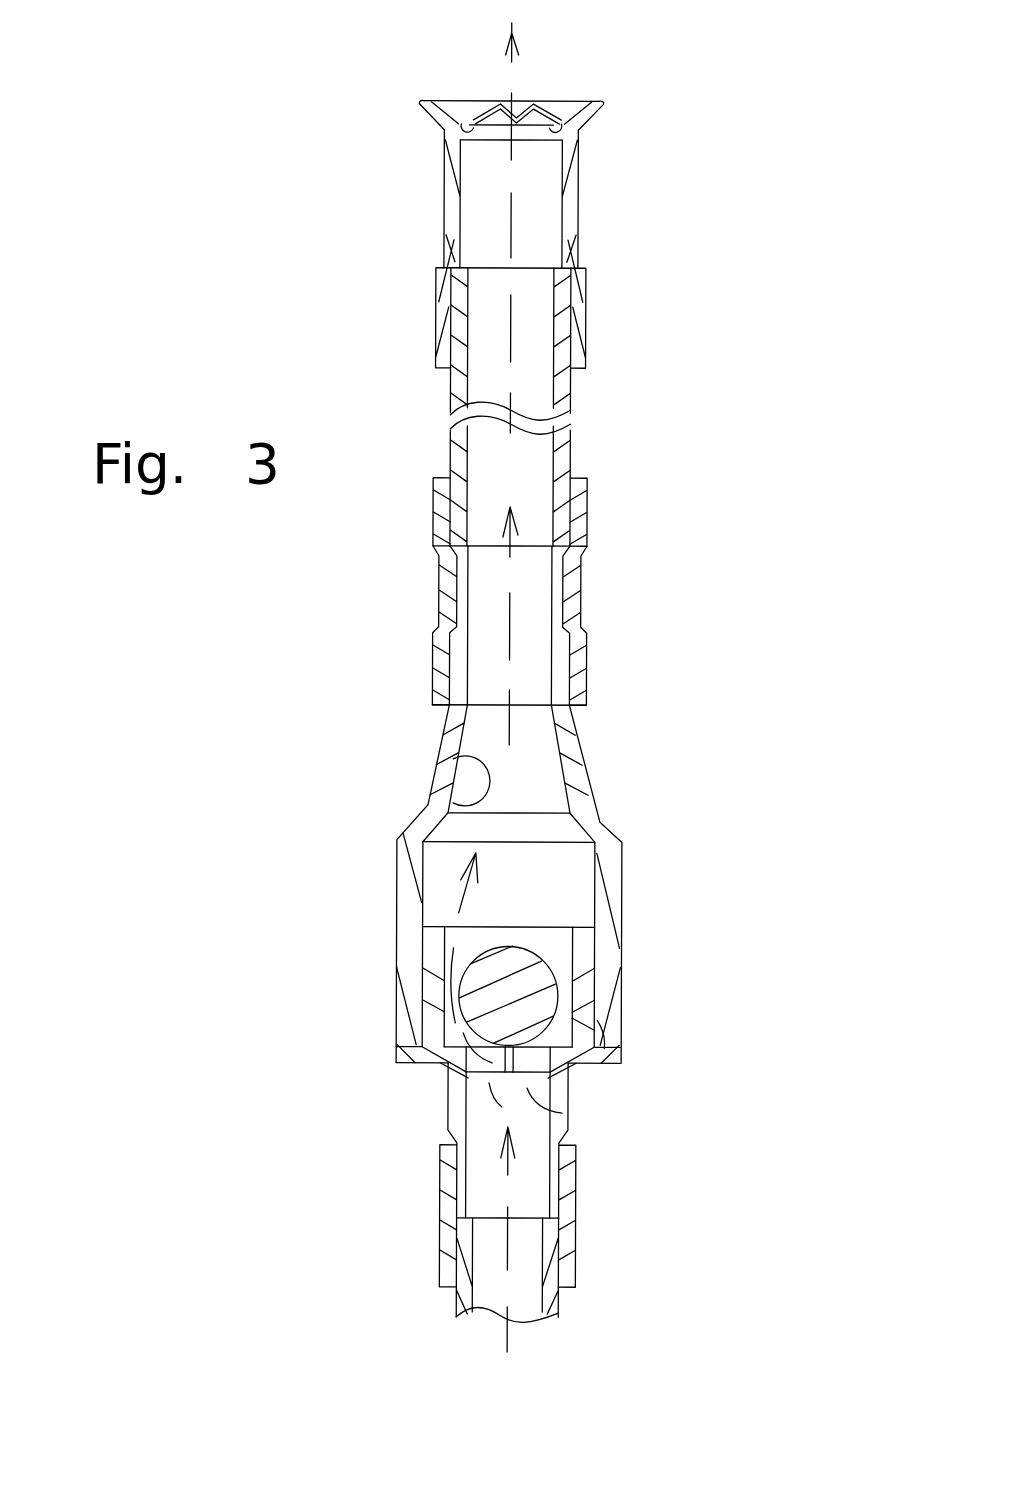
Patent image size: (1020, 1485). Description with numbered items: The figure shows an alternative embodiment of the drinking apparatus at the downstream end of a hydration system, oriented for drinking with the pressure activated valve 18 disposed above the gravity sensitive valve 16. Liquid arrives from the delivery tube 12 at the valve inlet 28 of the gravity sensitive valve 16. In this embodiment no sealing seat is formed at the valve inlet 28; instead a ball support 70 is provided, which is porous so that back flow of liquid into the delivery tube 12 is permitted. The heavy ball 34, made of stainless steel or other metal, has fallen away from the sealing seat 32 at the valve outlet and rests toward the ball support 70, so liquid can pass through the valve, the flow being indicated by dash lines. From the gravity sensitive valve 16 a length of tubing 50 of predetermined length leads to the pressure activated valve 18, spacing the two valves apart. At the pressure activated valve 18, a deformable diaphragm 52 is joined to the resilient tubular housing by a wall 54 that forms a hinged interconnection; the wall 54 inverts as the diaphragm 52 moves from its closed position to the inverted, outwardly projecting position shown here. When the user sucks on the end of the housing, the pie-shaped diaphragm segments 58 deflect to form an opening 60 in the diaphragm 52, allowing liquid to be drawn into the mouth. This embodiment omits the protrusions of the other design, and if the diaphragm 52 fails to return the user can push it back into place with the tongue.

The delivery tube 12 is at (555, 1293).
The gravity sensitive valve 16 is at (622, 900).
The pressure activated valve 18 is at (580, 188).
The valve inlet 28 is at (566, 1110).
The sealing seat 32 is at (450, 803).
The ball 34 is at (532, 1005).
The tubing 50 is at (562, 471).
The diaphragm 52 is at (472, 122).
The wall 54 is at (498, 135).
The diaphragm segments 58 is at (519, 110).
The opening 60 is at (548, 104).
The ball support 70 is at (488, 1060).